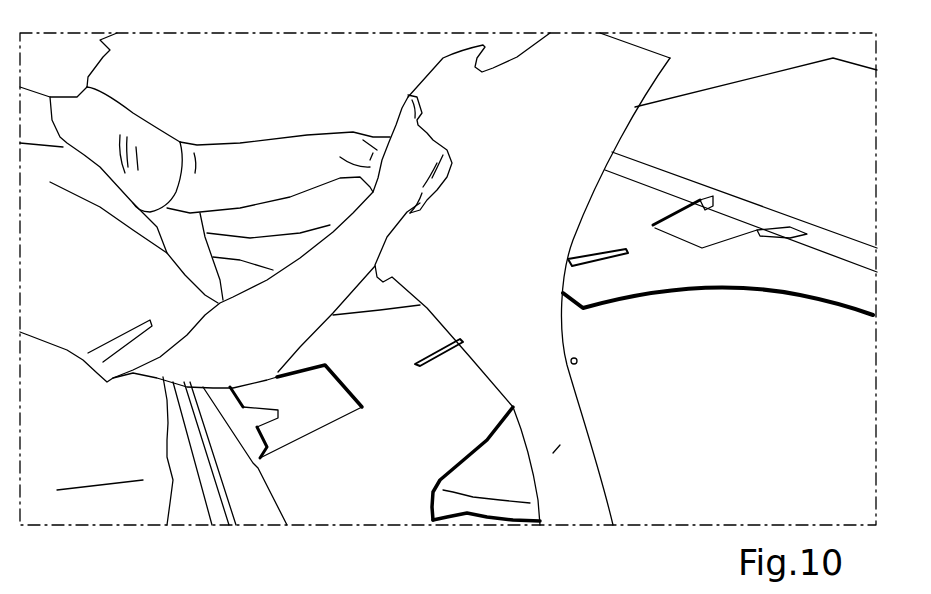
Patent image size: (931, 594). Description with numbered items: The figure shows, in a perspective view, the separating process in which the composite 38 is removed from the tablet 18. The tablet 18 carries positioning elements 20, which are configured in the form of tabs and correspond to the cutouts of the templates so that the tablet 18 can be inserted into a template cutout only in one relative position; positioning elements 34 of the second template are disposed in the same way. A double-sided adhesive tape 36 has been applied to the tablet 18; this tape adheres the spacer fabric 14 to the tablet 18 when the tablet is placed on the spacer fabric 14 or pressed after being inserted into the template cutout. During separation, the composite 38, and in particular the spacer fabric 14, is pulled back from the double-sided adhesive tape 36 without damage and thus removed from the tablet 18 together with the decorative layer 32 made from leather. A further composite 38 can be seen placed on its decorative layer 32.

The spacer fabric 14 is at (677, 280).
The tablet 18 is at (472, 467).
The positioning elements 20 is at (285, 412).
The decorative layer 32 is at (534, 190).
The positioning elements 34 is at (222, 423).
The double-sided adhesive tape 36 is at (411, 467).
The composite 38 is at (570, 328).